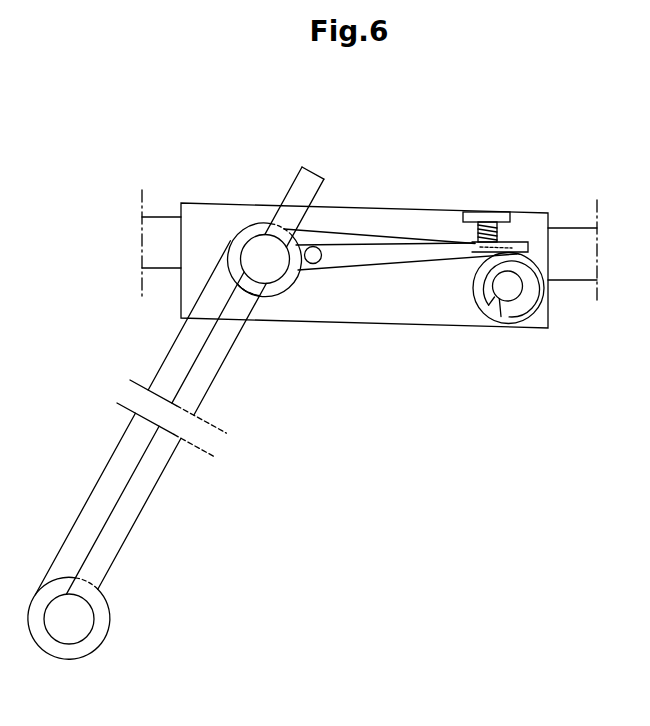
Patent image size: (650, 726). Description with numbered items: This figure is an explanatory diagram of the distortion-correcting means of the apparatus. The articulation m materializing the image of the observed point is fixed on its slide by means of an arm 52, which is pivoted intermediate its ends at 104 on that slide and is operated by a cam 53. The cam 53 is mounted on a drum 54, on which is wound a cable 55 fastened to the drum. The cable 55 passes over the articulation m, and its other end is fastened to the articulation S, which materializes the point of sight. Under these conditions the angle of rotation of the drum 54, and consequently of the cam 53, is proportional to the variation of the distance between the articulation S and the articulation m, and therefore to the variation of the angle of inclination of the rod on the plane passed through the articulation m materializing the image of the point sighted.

The cable 55 is at (383, 232).
The pivot 104 is at (321, 248).
The articulation m is at (268, 272).
The arm 52 is at (364, 268).
The cam 53 is at (518, 307).
The drum 54 is at (493, 307).
The articulation S is at (83, 619).